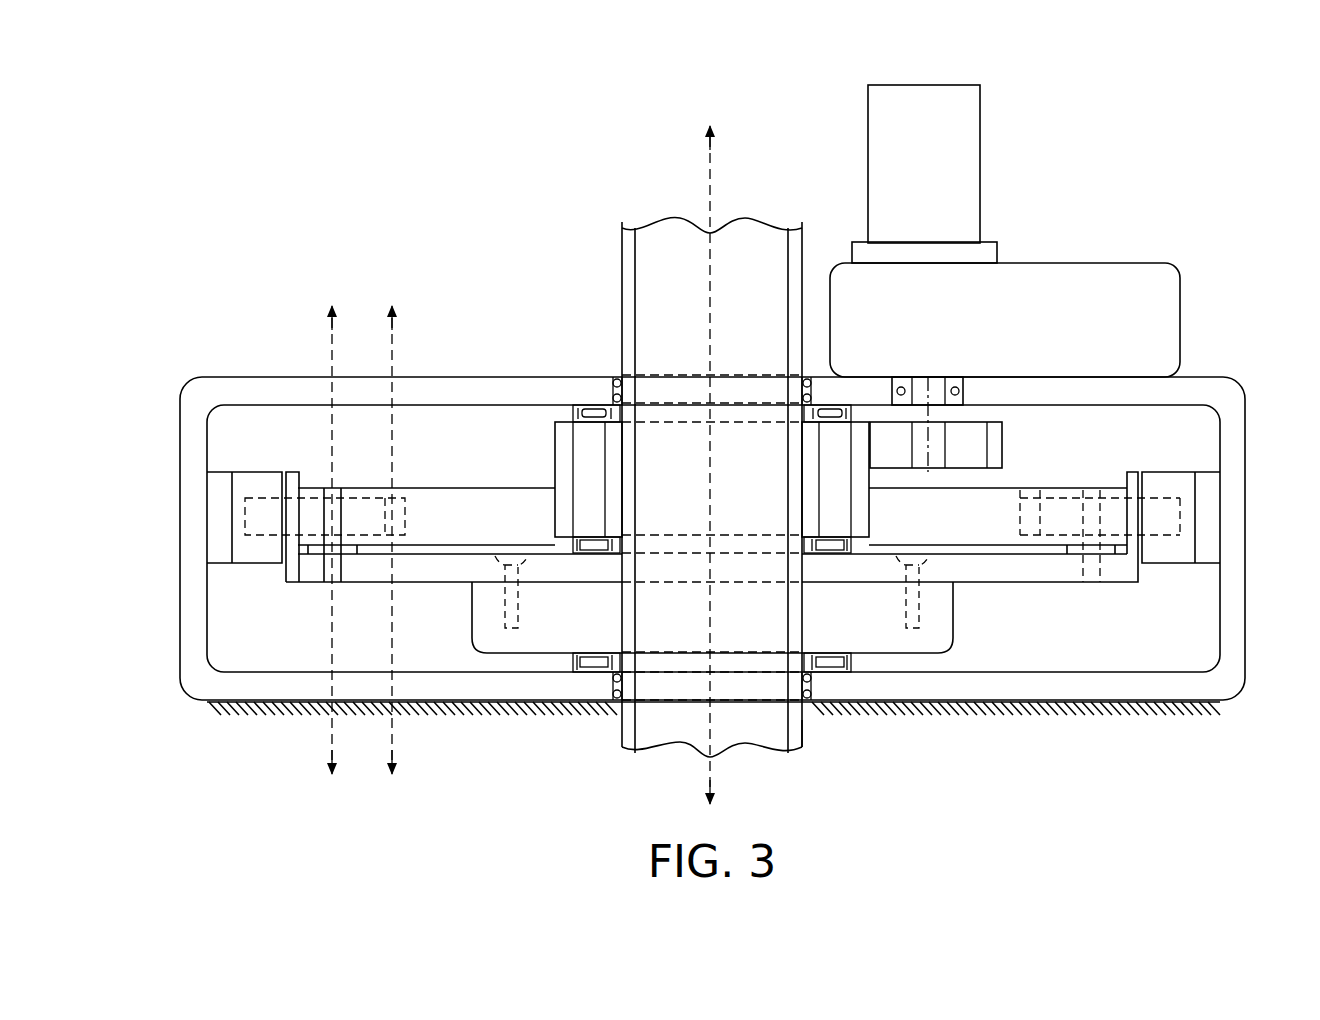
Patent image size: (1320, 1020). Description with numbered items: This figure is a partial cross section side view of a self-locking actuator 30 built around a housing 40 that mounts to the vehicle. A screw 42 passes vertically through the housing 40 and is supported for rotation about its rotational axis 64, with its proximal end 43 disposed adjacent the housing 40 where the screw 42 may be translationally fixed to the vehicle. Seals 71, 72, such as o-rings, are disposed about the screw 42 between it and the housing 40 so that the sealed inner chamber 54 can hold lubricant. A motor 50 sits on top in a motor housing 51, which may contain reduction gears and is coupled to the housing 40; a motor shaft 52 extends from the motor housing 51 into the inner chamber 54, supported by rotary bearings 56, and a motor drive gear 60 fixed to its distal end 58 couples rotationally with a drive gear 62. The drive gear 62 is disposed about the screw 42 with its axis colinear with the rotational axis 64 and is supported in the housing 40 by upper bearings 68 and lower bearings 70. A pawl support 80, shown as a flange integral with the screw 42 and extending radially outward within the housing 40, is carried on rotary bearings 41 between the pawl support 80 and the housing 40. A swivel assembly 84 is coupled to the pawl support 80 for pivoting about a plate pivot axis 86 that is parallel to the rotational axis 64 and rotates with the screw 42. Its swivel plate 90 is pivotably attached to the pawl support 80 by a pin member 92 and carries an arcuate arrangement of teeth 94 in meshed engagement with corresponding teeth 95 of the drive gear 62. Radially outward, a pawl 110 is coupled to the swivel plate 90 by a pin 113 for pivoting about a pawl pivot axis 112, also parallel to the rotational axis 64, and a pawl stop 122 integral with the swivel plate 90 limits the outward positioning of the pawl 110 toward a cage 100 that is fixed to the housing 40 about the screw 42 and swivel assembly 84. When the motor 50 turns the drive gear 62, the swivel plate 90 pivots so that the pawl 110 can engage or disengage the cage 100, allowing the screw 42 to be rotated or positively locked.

The self-locking actuator 30 is at (452, 157).
The housing 40 is at (1245, 480).
The rotary bearings 41 is at (580, 675).
The screw 42 is at (757, 222).
The proximal end 43 is at (811, 746).
The motor 50 is at (986, 166).
The motor housing 51 is at (1182, 300).
The motor shaft 52 is at (947, 418).
The inner chamber 54 is at (1187, 633).
The rotary bearings 56 is at (971, 395).
The distal end 58 is at (951, 456).
The motor drive gear 60 is at (1003, 455).
The drive gear 62 is at (870, 520).
The rotational axis 64 is at (707, 147).
The upper bearings 68 is at (572, 401).
The lower bearings 70 is at (580, 557).
The seal 71 is at (614, 374).
The seal 72 is at (616, 706).
The pawl support 80 is at (1043, 583).
The swivel assembly 84 is at (437, 484).
The plate pivot axis 86 is at (327, 323).
The swivel plate 90 is at (437, 539).
The pin member 92 is at (317, 567).
The arcuate arrangement of teeth 94 is at (862, 542).
The teeth 95 is at (862, 430).
The cage 100 is at (250, 563).
The pawl 110 is at (263, 497).
The pawl pivot axis 112 is at (397, 323).
The pin 113 is at (400, 492).
The pawl stop 122 is at (297, 470).